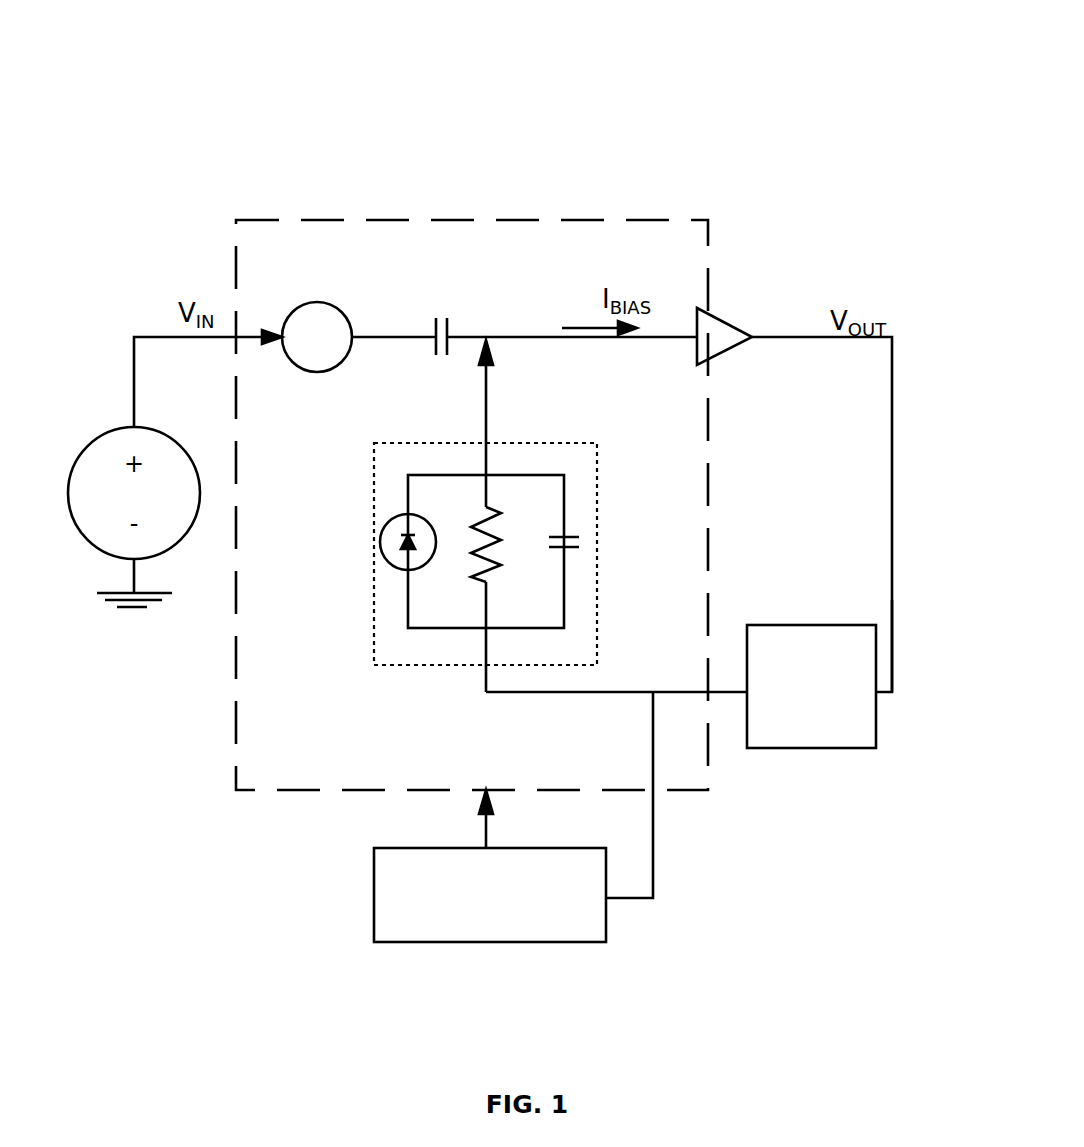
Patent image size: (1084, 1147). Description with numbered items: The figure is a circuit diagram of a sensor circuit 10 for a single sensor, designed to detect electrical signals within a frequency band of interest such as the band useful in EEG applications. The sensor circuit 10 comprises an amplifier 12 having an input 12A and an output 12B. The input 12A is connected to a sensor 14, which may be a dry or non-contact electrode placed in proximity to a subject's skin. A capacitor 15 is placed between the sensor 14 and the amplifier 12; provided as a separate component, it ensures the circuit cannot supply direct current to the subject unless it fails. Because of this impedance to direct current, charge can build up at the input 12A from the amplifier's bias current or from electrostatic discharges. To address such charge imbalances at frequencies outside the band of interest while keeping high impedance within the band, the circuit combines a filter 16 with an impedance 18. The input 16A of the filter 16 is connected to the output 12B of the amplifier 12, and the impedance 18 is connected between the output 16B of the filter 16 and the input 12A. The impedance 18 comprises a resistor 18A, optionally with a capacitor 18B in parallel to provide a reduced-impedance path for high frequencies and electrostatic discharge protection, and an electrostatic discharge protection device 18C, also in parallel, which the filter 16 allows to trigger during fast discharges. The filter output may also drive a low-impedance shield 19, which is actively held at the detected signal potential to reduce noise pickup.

The sensor circuit 10 is at (792, 88).
The amplifier 12 is at (718, 318).
The input 12A is at (589, 309).
The output 12B is at (822, 499).
The sensor 14 is at (317, 337).
The capacitor 15 is at (446, 320).
The filter 16 is at (802, 748).
The input 16A is at (892, 613).
The output 16B is at (562, 693).
The impedance 18 is at (481, 564).
The resistor 18A is at (470, 543).
The capacitor 18B is at (580, 542).
The electrostatic discharge protection device 18C is at (398, 537).
The shield 19 is at (485, 942).